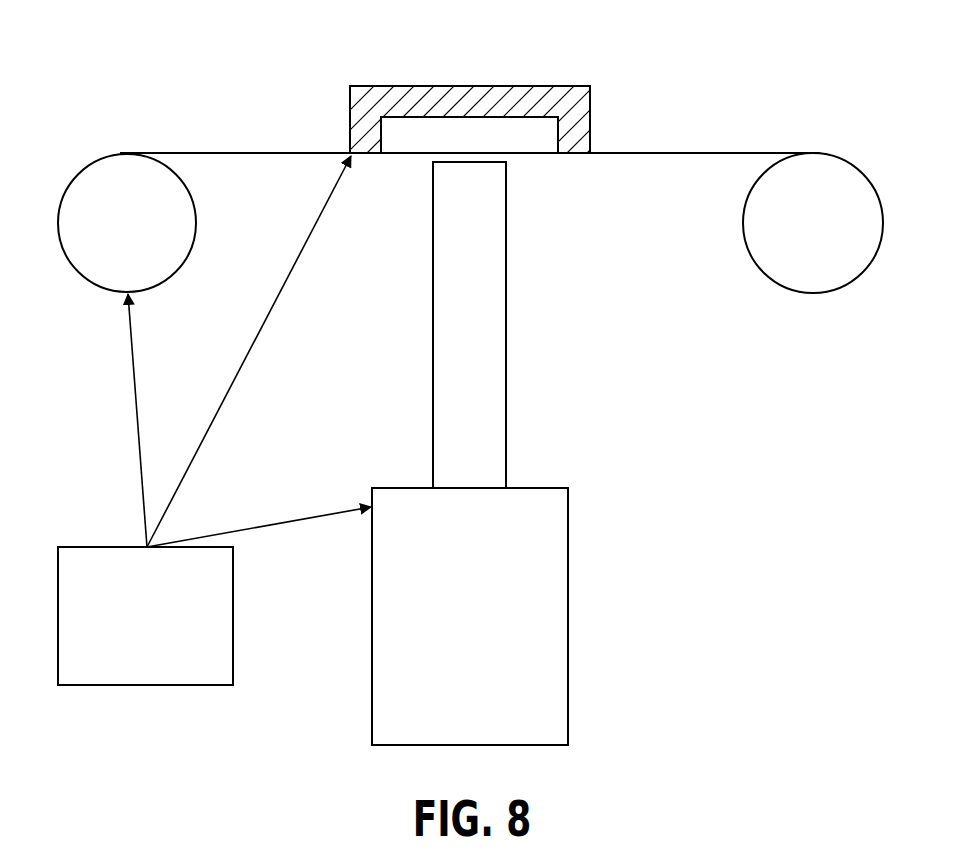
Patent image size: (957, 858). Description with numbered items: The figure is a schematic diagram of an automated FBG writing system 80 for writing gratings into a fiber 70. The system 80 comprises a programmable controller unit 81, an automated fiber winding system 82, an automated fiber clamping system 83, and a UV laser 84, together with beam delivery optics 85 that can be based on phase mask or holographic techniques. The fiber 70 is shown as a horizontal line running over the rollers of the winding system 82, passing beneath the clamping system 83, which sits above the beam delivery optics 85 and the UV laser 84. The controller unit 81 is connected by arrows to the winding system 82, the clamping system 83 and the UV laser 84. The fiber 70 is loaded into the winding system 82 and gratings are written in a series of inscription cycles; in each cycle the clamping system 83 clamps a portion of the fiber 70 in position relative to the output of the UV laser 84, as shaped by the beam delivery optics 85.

The fiber 70 is at (670, 147).
The automated FBG writing system 80 is at (450, 30).
The programmable controller unit 81 is at (134, 644).
The automated fiber winding system 82 is at (115, 233).
The automated fiber clamping system 83 is at (316, 114).
The UV laser 84 is at (458, 642).
The beam delivery optics 85 is at (516, 201).